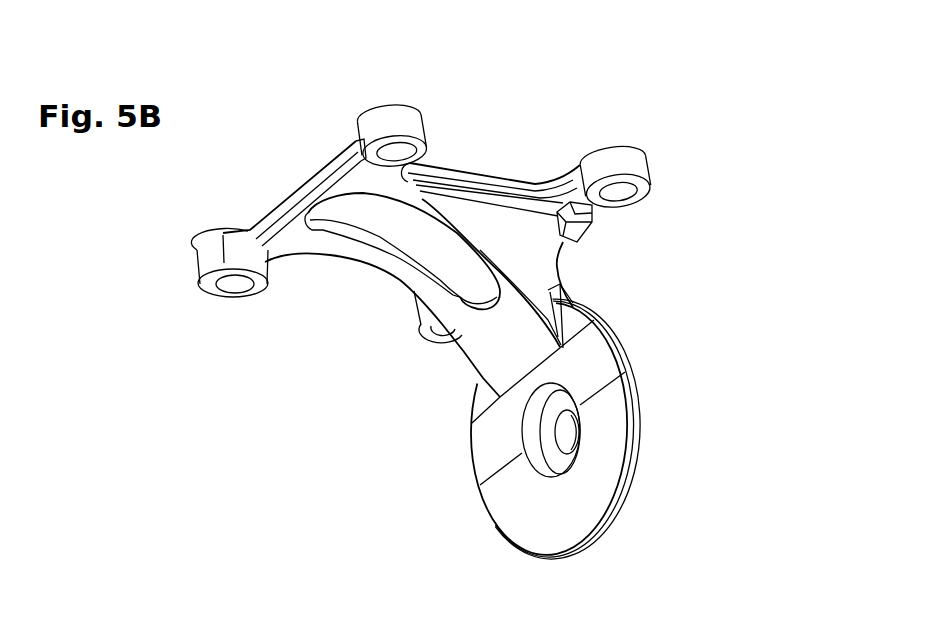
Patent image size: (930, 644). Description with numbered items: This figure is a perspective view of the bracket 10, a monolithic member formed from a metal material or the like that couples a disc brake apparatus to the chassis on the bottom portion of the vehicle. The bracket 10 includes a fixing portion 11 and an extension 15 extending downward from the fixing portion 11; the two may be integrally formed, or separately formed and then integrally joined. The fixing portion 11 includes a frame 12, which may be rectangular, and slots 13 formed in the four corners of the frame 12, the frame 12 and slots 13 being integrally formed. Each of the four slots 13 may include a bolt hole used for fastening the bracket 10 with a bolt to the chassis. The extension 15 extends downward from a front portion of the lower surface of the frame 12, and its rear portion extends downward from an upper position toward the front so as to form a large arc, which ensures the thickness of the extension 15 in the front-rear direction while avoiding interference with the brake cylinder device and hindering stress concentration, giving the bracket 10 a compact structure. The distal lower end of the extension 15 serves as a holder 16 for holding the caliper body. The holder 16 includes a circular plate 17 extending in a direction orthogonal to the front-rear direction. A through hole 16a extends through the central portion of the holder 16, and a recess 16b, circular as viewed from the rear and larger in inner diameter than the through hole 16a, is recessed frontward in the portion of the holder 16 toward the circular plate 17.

The bracket 10 is at (612, 90).
The fixing portion 11 is at (302, 165).
The frame 12 is at (473, 163).
The slots 13 is at (427, 112).
The extension 15 is at (673, 445).
The holder 16 is at (460, 492).
The through hole 16a is at (557, 437).
The recess 16b is at (530, 442).
The circular plate 17 is at (593, 540).